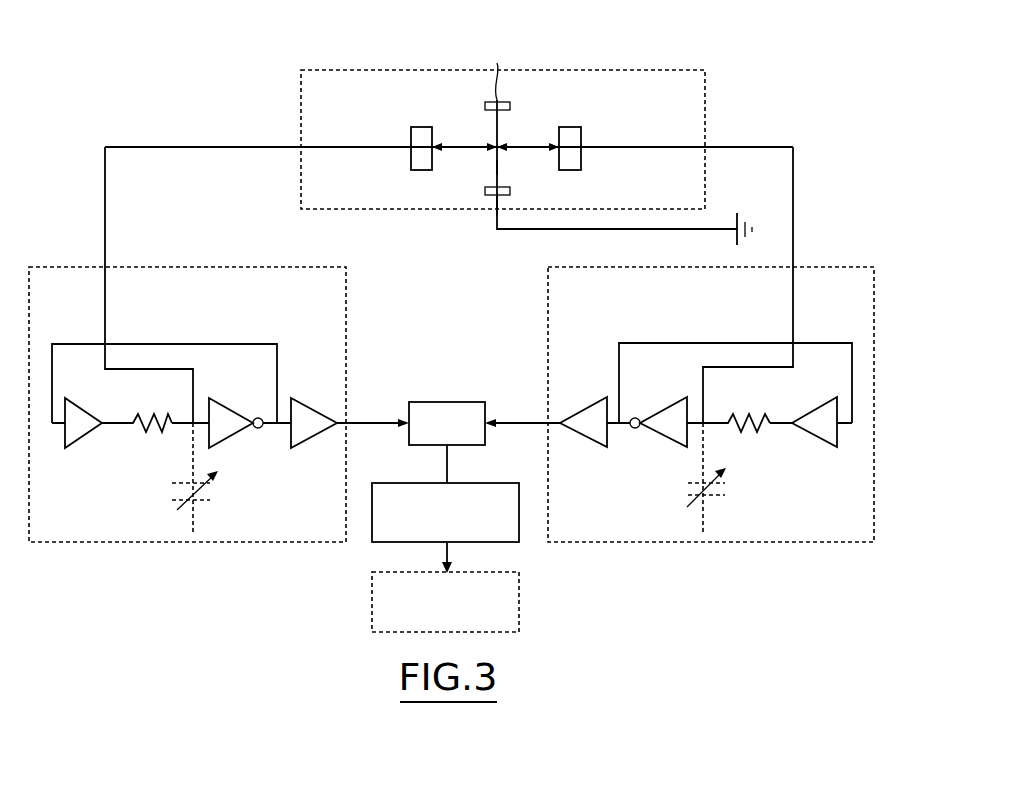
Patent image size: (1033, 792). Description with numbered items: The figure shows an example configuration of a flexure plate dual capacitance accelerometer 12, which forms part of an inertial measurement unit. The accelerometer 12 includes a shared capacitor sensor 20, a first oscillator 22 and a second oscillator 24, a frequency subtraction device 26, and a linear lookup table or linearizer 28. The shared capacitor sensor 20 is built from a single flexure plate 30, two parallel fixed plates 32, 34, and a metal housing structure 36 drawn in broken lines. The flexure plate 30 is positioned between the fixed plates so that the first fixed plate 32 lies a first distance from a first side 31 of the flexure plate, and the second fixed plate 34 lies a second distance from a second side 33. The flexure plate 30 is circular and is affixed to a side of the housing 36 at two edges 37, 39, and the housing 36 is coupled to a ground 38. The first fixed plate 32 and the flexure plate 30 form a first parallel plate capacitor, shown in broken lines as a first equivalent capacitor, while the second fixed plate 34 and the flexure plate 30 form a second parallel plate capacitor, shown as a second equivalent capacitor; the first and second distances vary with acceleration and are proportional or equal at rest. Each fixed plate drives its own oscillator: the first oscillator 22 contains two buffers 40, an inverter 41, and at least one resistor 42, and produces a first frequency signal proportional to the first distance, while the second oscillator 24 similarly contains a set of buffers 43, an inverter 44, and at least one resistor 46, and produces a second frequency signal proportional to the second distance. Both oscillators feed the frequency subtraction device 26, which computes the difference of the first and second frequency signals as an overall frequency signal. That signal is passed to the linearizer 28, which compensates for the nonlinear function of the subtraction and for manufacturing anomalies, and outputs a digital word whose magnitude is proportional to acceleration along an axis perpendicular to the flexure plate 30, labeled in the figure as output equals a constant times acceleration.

The accelerometer 12 is at (188, 567).
The shared capacitor sensor 20 is at (402, 209).
The first oscillator 22 is at (247, 266).
The second oscillator 24 is at (548, 290).
The frequency subtraction device 26 is at (453, 400).
The linear lookup table 28 is at (387, 482).
The flexure plate 30 is at (495, 167).
The first side 31 is at (495, 123).
The first fixed plate 32 is at (417, 125).
The second side 33 is at (500, 173).
The second fixed plate 34 is at (582, 160).
The metal housing structure 36 is at (627, 70).
The edge 37 is at (498, 68).
The ground 38 is at (737, 222).
The edge 39 is at (485, 193).
The buffer 40 is at (85, 407).
The inverter 41 is at (343, 80).
The resistor 42 is at (147, 413).
The buffer 43 is at (585, 405).
The inverter 44 is at (662, 407).
The resistor 46 is at (753, 412).